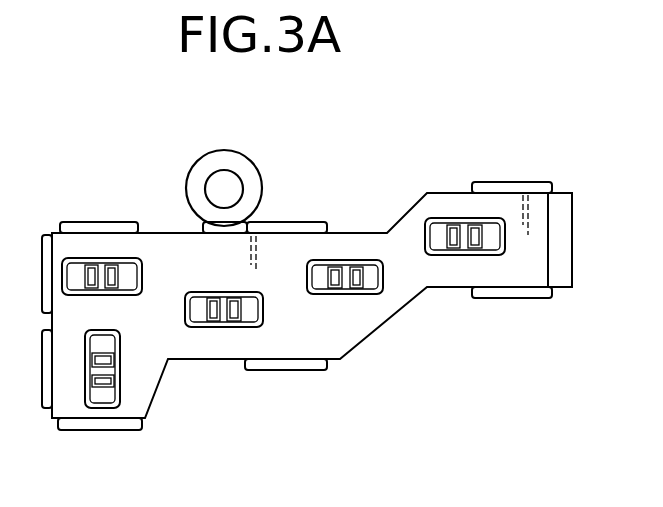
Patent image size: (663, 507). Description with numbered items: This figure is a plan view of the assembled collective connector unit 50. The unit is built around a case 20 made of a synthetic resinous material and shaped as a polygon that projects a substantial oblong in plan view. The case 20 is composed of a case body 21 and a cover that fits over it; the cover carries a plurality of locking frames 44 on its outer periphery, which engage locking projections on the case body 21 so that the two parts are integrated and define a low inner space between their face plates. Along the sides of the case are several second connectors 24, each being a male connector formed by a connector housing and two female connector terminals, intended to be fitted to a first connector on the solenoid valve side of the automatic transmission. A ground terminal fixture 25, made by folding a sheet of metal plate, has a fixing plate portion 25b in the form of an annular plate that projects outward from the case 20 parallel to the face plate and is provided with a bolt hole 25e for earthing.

The collective connector unit 50 is at (394, 187).
The case 20 is at (352, 232).
The case body 21 is at (288, 245).
The second connector 24 is at (143, 293).
The ground terminal fixture 25 is at (256, 152).
The fixing plate portion 25b is at (191, 152).
The bolt hole 25e is at (215, 190).
The locking frame 44 is at (98, 423).